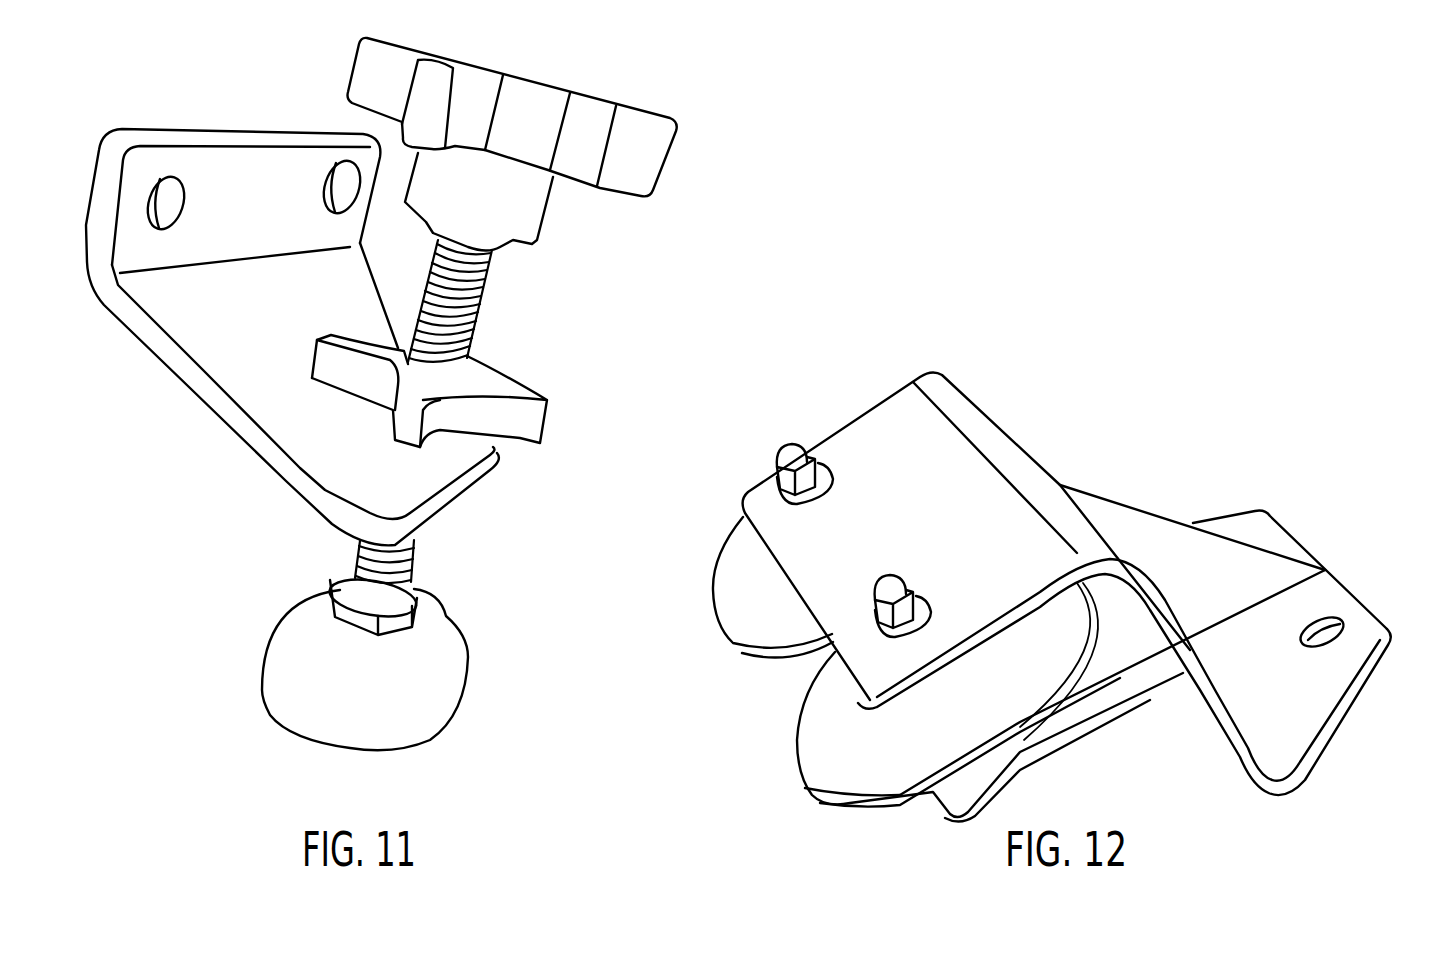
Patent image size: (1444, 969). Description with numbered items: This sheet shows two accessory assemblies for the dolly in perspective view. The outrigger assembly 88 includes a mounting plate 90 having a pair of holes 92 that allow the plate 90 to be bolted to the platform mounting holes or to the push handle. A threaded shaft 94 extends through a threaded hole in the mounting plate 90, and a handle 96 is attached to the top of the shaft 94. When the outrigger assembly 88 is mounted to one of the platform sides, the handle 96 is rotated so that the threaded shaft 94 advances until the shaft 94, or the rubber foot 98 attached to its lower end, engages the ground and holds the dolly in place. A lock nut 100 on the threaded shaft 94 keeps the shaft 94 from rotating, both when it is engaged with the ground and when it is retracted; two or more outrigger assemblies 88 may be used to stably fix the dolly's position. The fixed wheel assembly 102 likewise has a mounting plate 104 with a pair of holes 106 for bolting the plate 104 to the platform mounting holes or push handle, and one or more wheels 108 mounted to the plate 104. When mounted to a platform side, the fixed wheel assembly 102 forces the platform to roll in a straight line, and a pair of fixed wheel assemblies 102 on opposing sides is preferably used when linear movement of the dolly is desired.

In FIG. 11, the outrigger assembly 88 is at (186, 101).
In FIG. 11, the mounting plate 90 is at (238, 423).
In FIG. 11, the pair of holes 92 is at (322, 186).
In FIG. 11, the threaded shaft 94 is at (477, 305).
In FIG. 11, the handle 96 is at (668, 150).
In FIG. 11, the rubber foot 98 is at (466, 680).
In FIG. 11, the lock nut 100 is at (548, 410).
In FIG. 12, the fixed wheel assembly 102 is at (1122, 440).
In FIG. 12, the mounting plate 104 is at (1327, 747).
In FIG. 12, the pair of holes 106 is at (1313, 617).
In FIG. 12, the wheels 108 is at (752, 630).